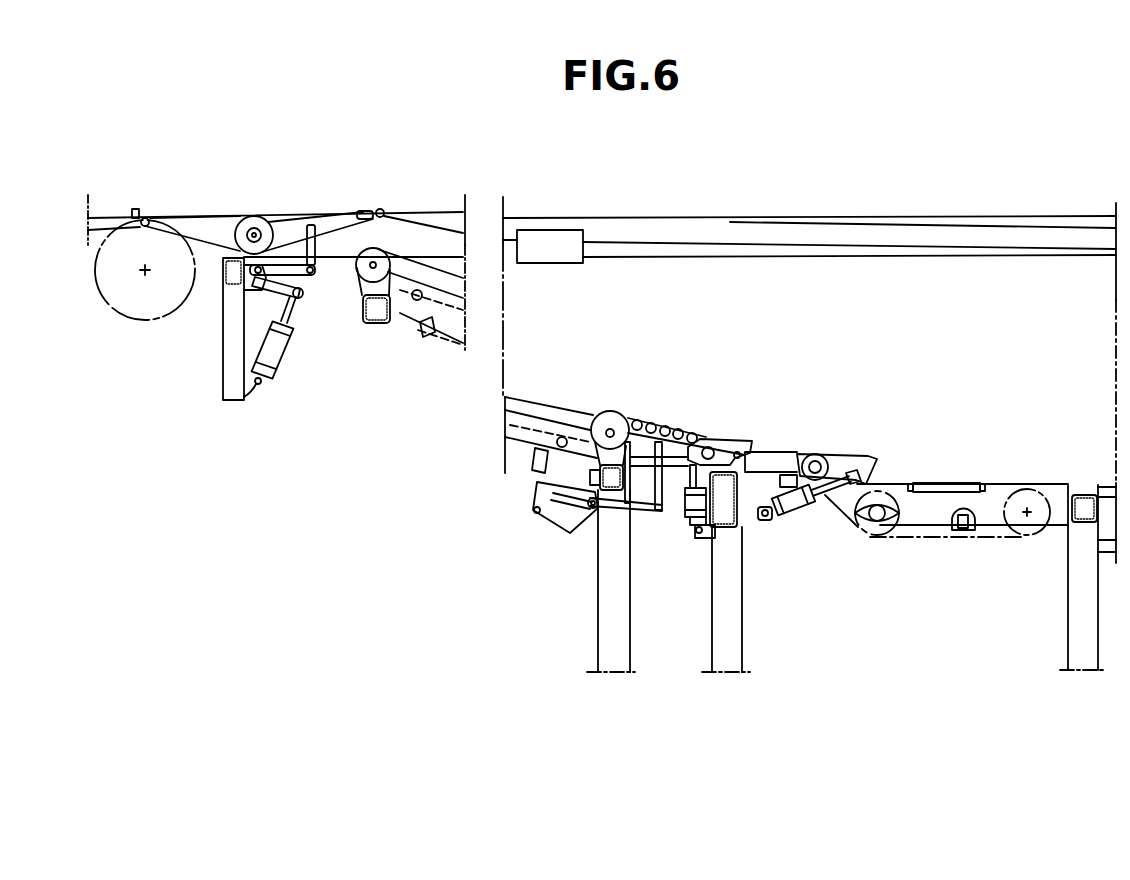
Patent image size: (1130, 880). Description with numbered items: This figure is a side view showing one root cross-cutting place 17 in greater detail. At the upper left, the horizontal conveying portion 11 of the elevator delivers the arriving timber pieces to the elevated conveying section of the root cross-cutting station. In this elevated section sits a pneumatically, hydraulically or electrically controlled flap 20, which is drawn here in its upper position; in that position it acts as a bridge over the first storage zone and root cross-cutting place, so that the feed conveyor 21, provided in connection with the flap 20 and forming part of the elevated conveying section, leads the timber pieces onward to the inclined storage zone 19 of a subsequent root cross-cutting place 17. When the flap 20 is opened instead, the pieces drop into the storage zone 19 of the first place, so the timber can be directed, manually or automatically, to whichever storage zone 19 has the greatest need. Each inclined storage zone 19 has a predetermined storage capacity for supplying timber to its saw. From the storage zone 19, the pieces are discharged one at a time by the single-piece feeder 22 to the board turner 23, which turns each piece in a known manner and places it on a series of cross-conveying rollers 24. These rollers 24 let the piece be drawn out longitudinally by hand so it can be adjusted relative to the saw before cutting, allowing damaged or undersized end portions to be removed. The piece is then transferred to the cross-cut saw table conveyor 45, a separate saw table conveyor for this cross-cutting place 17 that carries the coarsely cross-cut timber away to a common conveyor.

The horizontal conveying portion 11 is at (105, 217).
The root cross-cutting place 17 is at (692, 412).
The inclined storage zone 19 is at (412, 312).
The controlled flap 20 is at (328, 215).
The feed conveyor 21 is at (410, 213).
The single-piece feeder 22 is at (733, 443).
The board turner 23 is at (845, 453).
The cross-conveying rollers 24 is at (935, 482).
The cross-cut saw table conveyor 45 is at (938, 545).